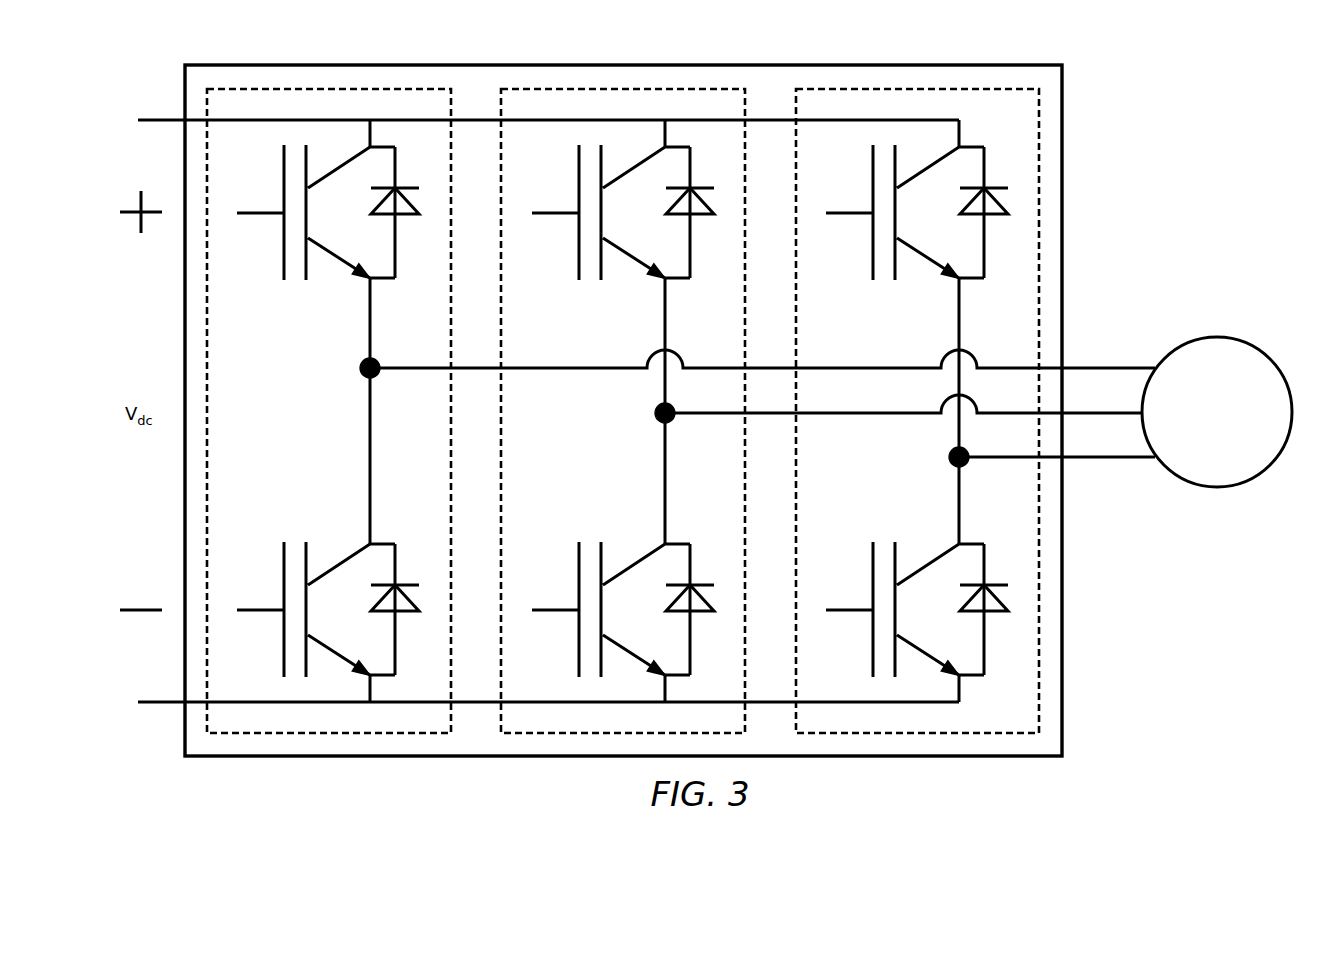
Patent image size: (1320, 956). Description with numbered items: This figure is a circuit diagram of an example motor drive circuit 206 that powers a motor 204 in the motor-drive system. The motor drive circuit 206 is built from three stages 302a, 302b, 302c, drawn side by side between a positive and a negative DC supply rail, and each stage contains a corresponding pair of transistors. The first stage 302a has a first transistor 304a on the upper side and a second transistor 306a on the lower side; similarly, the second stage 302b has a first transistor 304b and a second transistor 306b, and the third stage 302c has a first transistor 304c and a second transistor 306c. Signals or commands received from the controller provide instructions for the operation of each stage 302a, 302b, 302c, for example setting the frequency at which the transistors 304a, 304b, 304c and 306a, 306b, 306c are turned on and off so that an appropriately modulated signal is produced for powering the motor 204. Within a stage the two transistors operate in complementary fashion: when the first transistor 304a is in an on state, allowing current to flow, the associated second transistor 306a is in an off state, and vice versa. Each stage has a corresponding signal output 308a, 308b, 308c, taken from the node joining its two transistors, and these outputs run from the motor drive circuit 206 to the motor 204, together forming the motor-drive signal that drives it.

The motor drive circuit 206 is at (1062, 88).
The motor 204 is at (1217, 487).
The first stage 302a is at (207, 144).
The second stage 302b is at (501, 458).
The third stage 302c is at (1039, 145).
The first transistor 304a is at (297, 281).
The first transistor 304b is at (592, 281).
The first transistor 304c is at (887, 281).
The second transistor 306a is at (296, 543).
The second transistor 306b is at (592, 543).
The second transistor 306c is at (889, 543).
The signal output 308a is at (479, 366).
The signal output 308b is at (766, 414).
The signal output 308c is at (1105, 458).